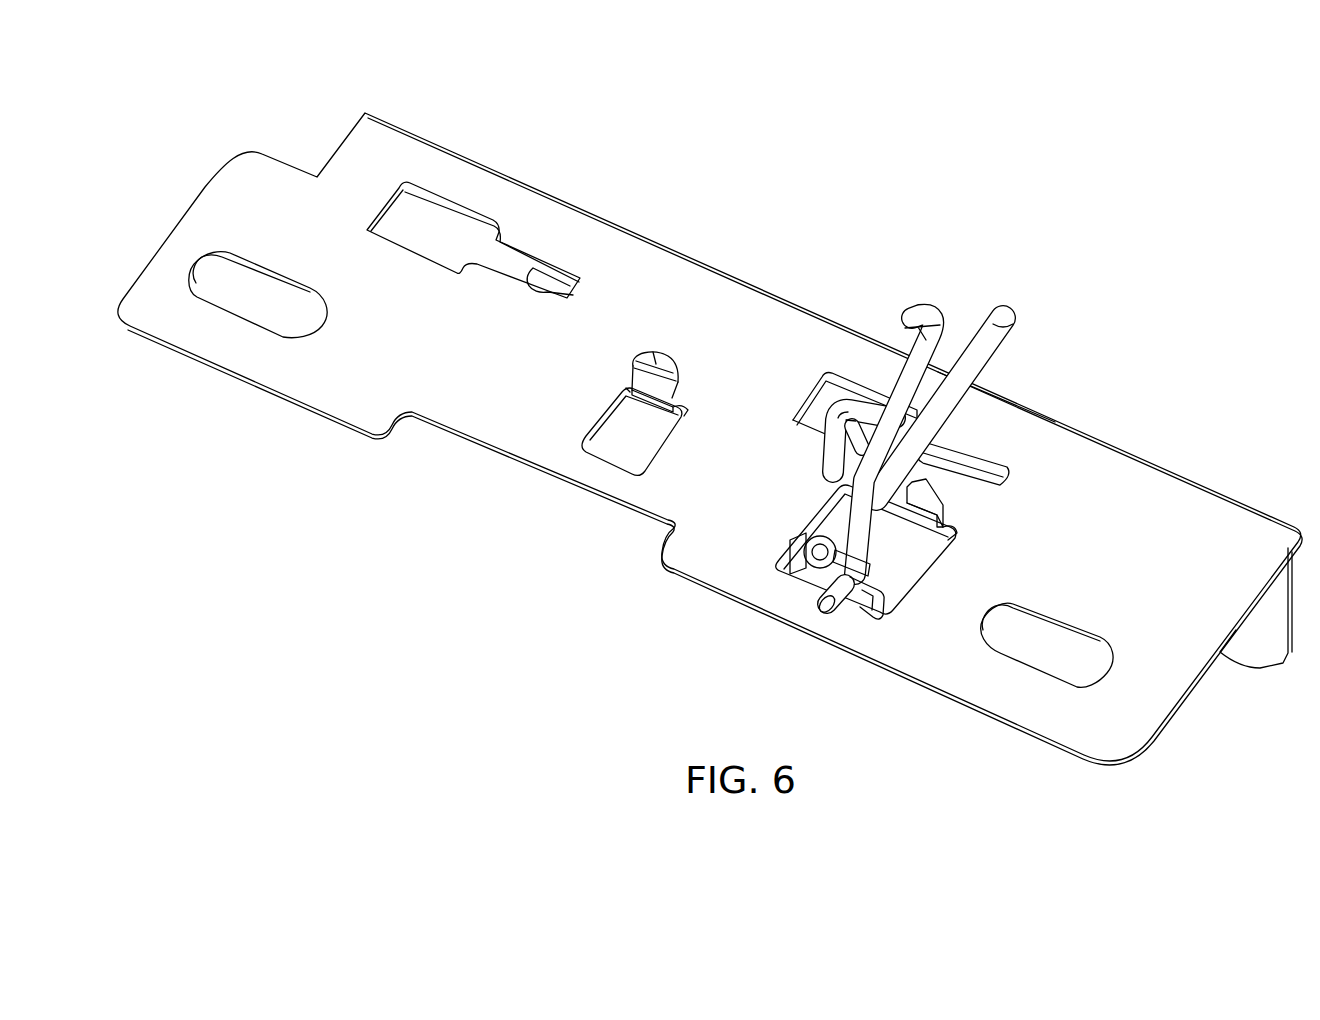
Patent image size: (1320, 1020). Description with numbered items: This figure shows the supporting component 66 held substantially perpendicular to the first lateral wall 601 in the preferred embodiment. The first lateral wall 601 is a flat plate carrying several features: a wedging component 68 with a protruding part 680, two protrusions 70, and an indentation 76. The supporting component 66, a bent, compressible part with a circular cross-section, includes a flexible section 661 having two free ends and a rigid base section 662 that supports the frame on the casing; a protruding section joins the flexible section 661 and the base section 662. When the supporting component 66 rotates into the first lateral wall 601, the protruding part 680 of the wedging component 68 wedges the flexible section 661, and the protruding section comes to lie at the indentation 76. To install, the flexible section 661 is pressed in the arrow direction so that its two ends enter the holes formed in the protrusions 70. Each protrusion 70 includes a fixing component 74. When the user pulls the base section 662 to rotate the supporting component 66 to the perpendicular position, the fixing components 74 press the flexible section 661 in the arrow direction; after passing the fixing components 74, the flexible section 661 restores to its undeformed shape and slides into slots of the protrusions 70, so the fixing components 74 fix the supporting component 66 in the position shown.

The first lateral wall 601 is at (1163, 159).
The indentation 76 is at (516, 482).
The wedging component 68 is at (661, 353).
The protruding part 680 is at (630, 385).
The supporting component 66 is at (1047, 258).
The flexible section 661 is at (1012, 310).
The base section 662 is at (893, 392).
The protrusion 70 is at (920, 483).
The fixing component 74 is at (805, 565).